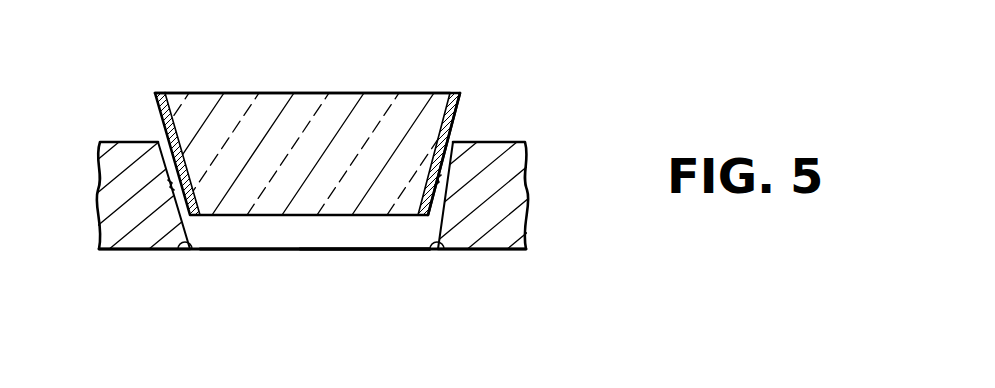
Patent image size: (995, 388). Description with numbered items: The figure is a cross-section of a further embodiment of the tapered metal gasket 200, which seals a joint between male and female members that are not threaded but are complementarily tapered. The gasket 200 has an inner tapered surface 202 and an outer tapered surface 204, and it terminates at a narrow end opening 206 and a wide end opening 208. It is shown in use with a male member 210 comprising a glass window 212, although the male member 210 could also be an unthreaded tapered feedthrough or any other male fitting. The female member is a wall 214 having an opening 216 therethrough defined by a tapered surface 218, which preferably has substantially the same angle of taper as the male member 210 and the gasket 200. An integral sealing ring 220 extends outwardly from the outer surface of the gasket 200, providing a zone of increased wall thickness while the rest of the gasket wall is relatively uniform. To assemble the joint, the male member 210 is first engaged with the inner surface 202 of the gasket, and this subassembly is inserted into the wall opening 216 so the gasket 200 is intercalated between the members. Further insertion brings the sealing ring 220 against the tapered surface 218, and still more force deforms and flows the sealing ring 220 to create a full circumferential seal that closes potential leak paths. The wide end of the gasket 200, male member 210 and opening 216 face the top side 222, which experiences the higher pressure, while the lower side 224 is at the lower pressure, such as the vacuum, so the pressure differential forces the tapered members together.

The gasket 200 is at (306, 172).
The inner tapered surface 202 is at (427, 97).
The outer tapered surface 204 is at (462, 107).
The narrow end opening 206 is at (293, 240).
The wide end opening 208 is at (178, 78).
The male member 210 is at (346, 84).
The glass window 212 is at (245, 103).
The wall 214 is at (490, 233).
The opening 216 is at (356, 233).
The tapered surface 218 is at (203, 250).
The sealing ring 220 is at (172, 186).
The top side 222 is at (118, 128).
The lower side 224 is at (125, 266).